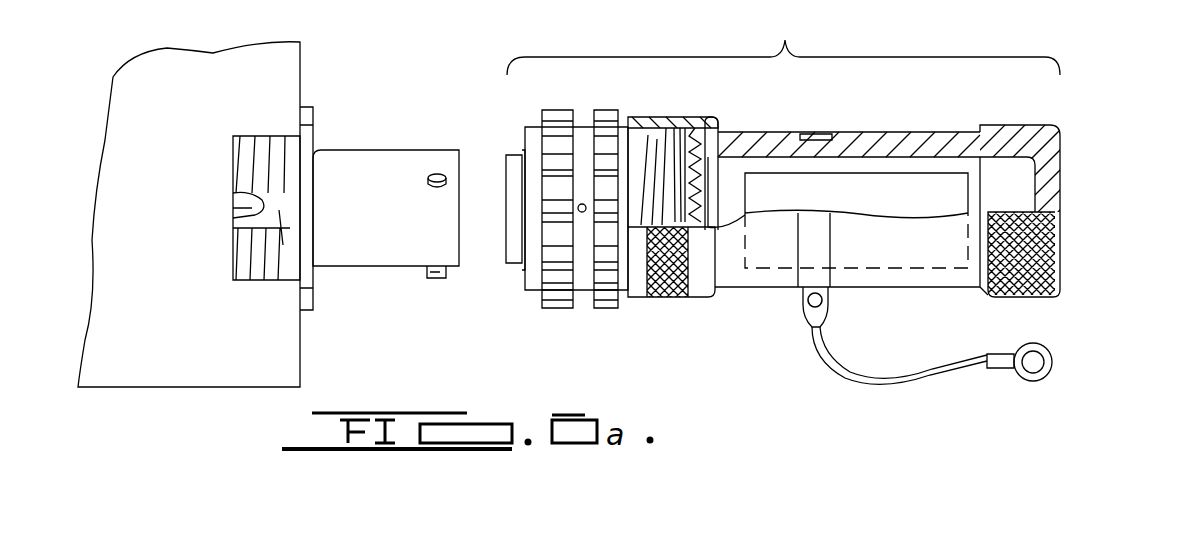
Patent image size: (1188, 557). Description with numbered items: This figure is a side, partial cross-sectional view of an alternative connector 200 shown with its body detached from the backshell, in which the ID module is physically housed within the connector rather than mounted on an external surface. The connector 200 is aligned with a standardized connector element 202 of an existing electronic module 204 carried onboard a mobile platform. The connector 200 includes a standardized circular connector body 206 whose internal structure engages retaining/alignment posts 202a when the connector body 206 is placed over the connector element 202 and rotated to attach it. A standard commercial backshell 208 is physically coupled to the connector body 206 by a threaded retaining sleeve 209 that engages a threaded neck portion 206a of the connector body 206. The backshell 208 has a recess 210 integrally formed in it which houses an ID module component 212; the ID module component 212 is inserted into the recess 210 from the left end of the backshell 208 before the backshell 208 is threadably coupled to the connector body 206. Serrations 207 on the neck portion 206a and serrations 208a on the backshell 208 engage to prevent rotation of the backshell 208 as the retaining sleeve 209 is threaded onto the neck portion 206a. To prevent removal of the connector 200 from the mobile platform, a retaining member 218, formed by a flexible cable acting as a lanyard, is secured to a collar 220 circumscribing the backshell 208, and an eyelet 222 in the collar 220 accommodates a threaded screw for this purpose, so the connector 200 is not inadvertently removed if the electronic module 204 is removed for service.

The connector 200 is at (783, 43).
The standardized connector element 202 is at (345, 172).
The retaining/alignment posts 202a is at (437, 174).
The electronic module 204 is at (180, 190).
The connector body 206 is at (591, 334).
The threaded neck portion 206a is at (655, 125).
The serrations 207 is at (717, 230).
The backshell 208 is at (836, 108).
The serrations 208a is at (710, 127).
The threaded retaining sleeve 209 is at (703, 297).
The recess 210 is at (980, 170).
The ID module component 212 is at (968, 188).
The retaining member 218 is at (900, 377).
The collar 220 is at (800, 290).
The eyelet 222 is at (823, 302).